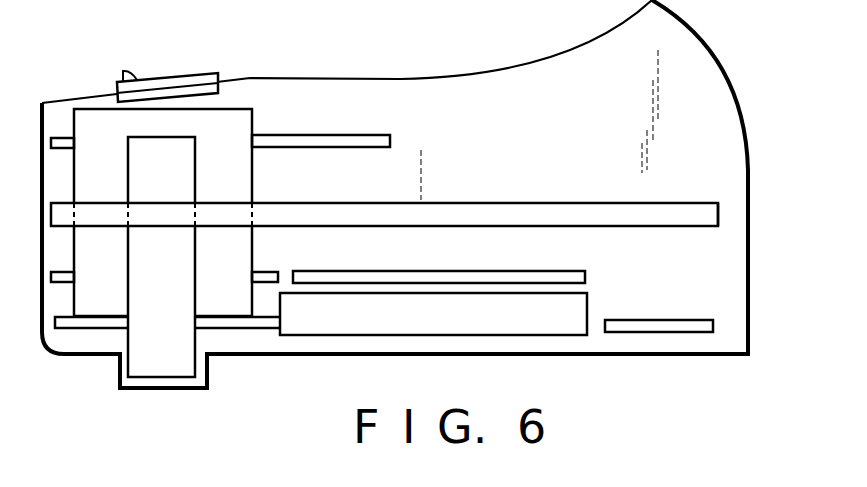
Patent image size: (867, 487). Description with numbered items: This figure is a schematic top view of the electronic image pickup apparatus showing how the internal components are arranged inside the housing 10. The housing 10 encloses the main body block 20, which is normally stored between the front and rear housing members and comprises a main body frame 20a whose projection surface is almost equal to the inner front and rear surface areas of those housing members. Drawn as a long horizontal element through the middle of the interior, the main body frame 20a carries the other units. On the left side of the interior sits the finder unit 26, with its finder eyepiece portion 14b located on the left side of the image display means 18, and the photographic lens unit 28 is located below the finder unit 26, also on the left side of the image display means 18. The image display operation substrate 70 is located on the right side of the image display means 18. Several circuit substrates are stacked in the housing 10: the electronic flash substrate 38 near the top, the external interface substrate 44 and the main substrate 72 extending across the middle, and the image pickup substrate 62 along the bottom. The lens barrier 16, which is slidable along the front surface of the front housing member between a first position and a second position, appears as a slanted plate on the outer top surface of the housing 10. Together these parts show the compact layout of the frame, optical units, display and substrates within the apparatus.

The housing 10 is at (742, 99).
The finder eyepiece portion 14b is at (118, 378).
The lens barrier 16 is at (180, 72).
The image display means 18 is at (590, 302).
The main body block 20 is at (695, 197).
The main body frame 20a is at (718, 213).
The finder unit 26 is at (183, 177).
The photographic lens unit 28 is at (238, 120).
The electronic flash substrate 38 is at (355, 135).
The external interface substrate 44 is at (272, 270).
The image pickup substrate 62 is at (238, 330).
The image display operation substrate 70 is at (713, 326).
The main substrate 72 is at (513, 270).